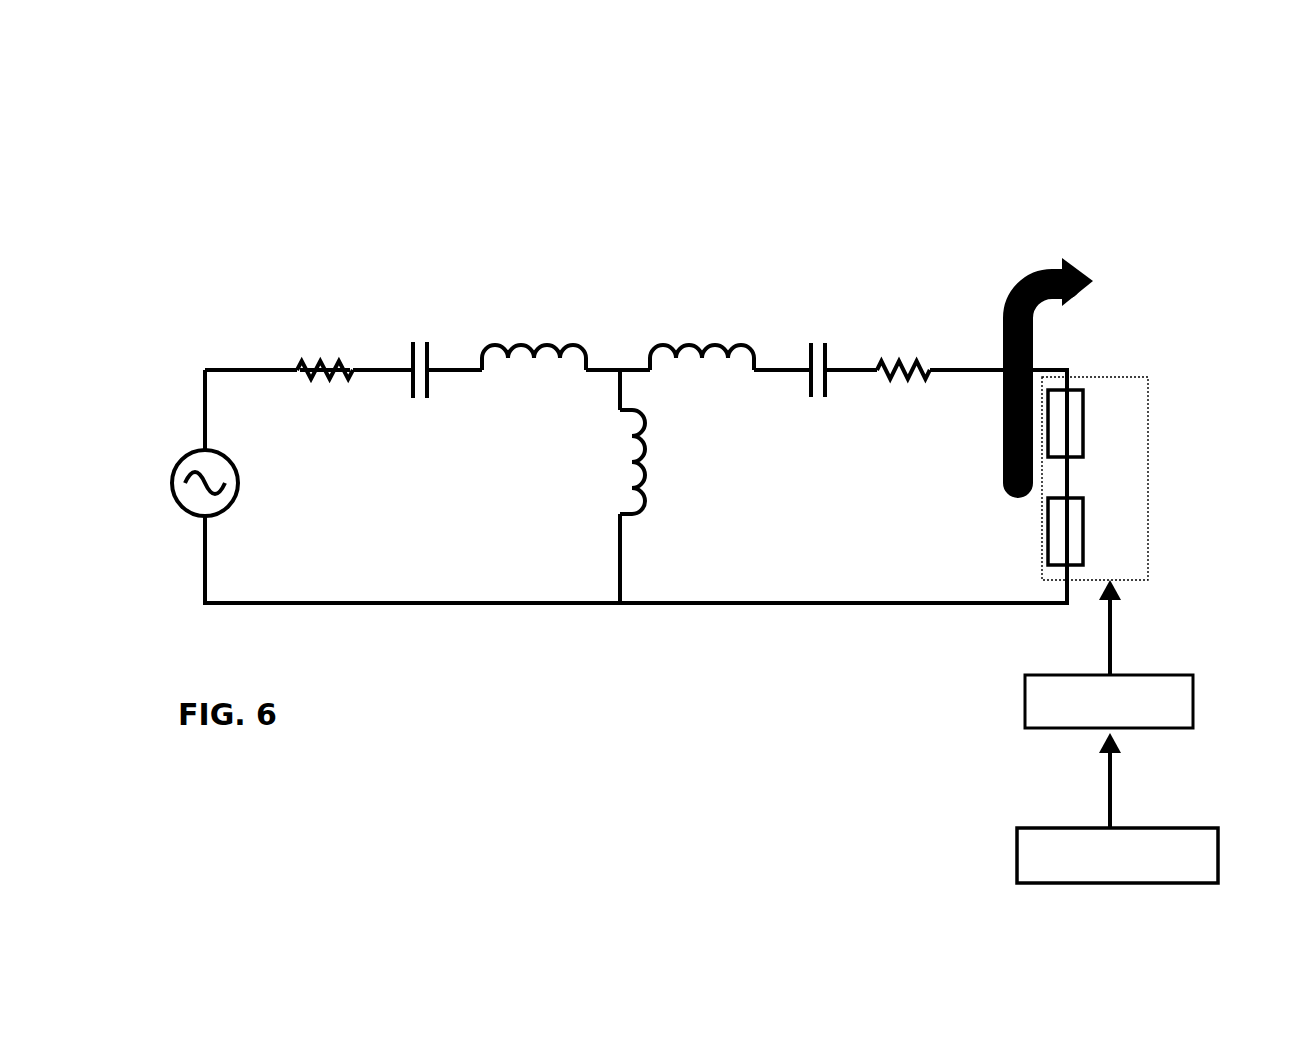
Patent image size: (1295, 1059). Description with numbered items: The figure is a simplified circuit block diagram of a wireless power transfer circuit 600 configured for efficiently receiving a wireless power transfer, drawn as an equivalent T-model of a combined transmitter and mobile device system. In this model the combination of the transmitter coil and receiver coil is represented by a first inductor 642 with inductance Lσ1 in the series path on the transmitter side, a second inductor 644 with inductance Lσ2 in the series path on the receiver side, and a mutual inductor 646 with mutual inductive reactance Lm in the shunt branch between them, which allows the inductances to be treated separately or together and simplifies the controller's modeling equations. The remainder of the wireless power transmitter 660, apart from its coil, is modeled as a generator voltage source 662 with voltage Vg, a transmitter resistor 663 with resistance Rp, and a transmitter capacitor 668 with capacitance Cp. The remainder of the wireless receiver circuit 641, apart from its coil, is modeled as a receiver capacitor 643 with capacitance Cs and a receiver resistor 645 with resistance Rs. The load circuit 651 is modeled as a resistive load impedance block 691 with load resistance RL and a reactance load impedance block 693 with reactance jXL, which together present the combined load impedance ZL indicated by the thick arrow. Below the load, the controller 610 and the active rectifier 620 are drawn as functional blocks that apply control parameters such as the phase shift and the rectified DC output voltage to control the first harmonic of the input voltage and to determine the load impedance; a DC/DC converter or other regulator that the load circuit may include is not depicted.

The wireless power transfer circuit 600 is at (212, 91).
The wireless power transmitter 660 is at (322, 182).
The generator voltage source 662 is at (146, 500).
The transmitter resistor 663 is at (327, 434).
The transmitter capacitor 668 is at (421, 480).
The first inductor 642 is at (542, 258).
The mutual inductor 646 is at (565, 498).
The second inductor 644 is at (706, 256).
The wireless receiver circuit 641 is at (872, 218).
The receiver capacitor 643 is at (819, 474).
The receiver resistor 645 is at (906, 464).
The load circuit 651 is at (1079, 196).
The resistive load impedance block 691 is at (1166, 424).
The reactance load impedance block 693 is at (1166, 516).
The active rectifier 620 is at (1006, 698).
The controller 610 is at (1003, 856).